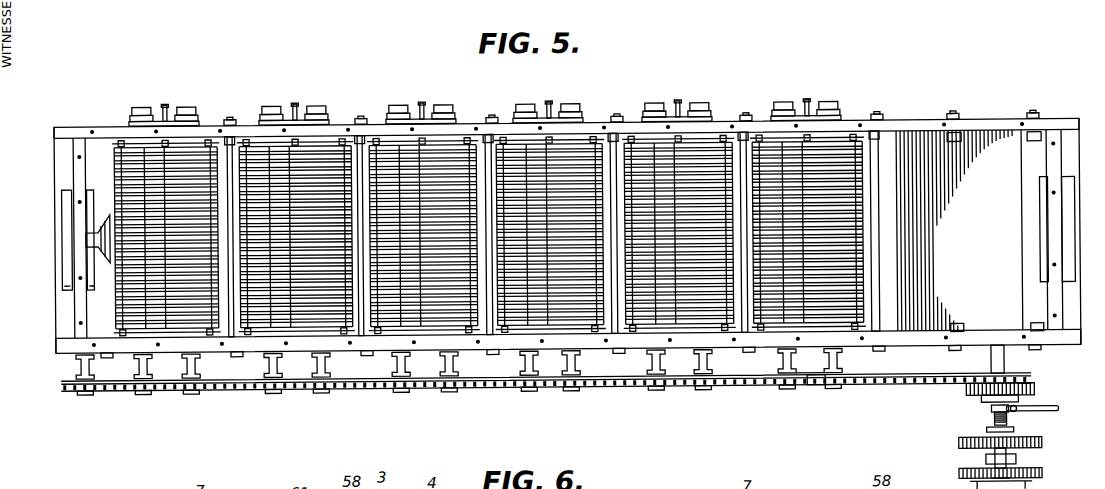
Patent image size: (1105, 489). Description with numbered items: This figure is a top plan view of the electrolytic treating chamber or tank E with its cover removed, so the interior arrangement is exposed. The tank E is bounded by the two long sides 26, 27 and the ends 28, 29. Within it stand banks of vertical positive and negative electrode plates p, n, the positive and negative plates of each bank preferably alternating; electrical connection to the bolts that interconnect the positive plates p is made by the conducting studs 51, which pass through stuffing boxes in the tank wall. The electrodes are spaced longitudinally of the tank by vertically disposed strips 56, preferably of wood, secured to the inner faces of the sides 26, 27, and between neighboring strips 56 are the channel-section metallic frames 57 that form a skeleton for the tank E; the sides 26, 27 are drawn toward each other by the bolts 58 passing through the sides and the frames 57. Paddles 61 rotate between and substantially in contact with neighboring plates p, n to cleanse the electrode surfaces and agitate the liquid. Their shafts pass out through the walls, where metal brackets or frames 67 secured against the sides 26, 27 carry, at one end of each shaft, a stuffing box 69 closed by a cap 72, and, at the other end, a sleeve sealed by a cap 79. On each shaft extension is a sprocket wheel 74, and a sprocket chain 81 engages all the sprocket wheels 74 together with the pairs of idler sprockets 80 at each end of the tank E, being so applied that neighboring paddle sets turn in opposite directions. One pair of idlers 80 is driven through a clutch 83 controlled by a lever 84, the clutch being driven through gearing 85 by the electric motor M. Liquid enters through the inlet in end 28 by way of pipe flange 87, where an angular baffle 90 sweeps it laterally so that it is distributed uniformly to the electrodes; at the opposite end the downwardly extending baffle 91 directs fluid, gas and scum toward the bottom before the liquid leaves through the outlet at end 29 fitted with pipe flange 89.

The side 26 is at (913, 348).
The side 27 is at (246, 125).
The end 28 is at (74, 167).
The end 29 is at (1062, 315).
The conducting studs 51 is at (166, 102).
The vertically disposed strips 56 is at (231, 137).
The metallic frames 57 is at (488, 134).
The bolts 58 is at (360, 155).
The paddles 61 is at (262, 147).
The metal brackets or frames 67 is at (561, 117).
The stuffing boxes 69 is at (823, 356).
The cap 72 is at (815, 382).
The sprocket wheel 74 is at (141, 377).
The cap 79 is at (786, 105).
The idler sprockets 80 is at (62, 383).
The sprocket chain 81 is at (913, 388).
The clutch 83 is at (978, 402).
The lever 84 is at (1047, 417).
The gearing 85 is at (1032, 476).
The pipe flange 87 is at (62, 216).
The pipe flange 89 is at (1062, 180).
The angular baffle 90 is at (98, 246).
The downwardly extending baffle 91 is at (955, 230).
The negative electrode plates n is at (201, 147).
The positive electrode plates p is at (337, 147).
The electrolytic treating chamber or tank E is at (567, 214).
The electric motor M is at (966, 488).